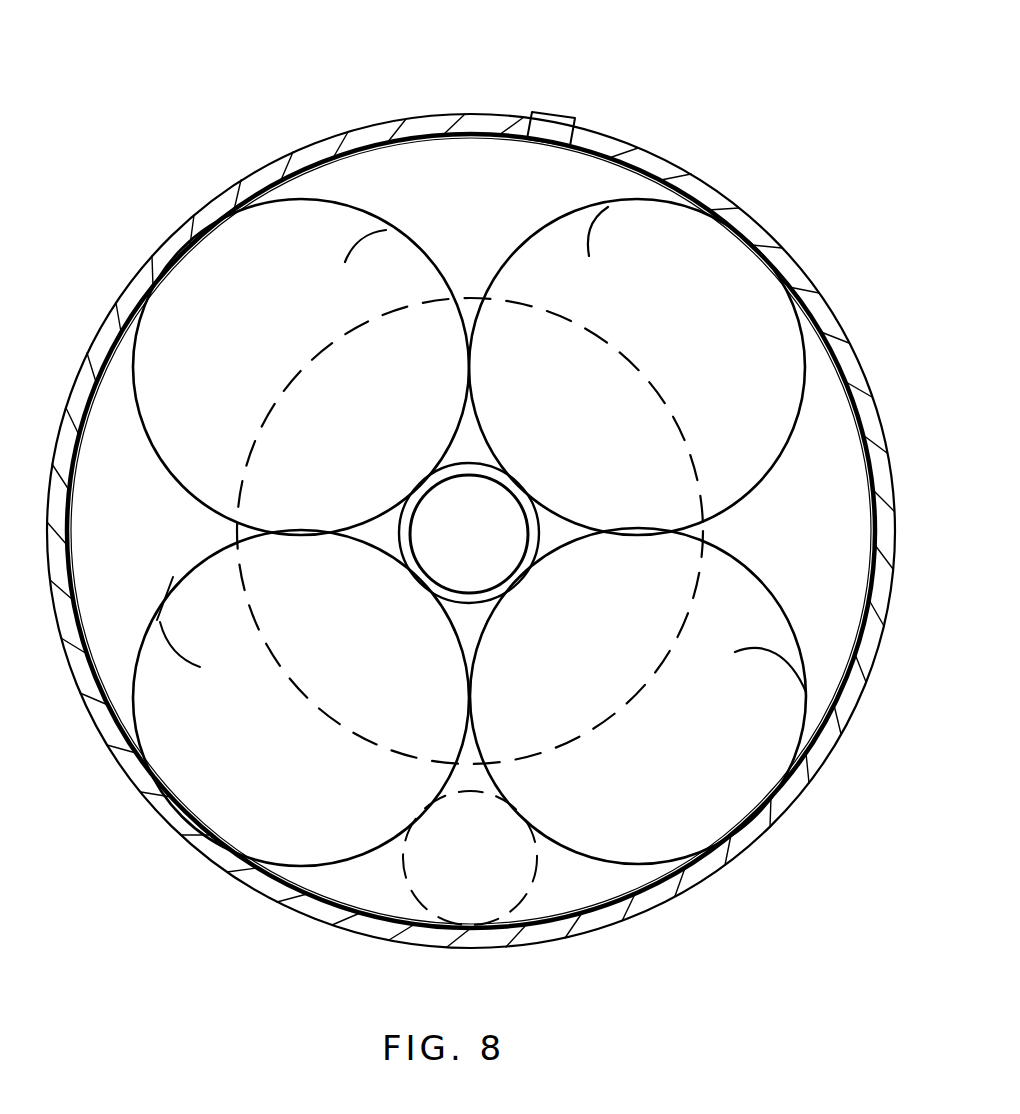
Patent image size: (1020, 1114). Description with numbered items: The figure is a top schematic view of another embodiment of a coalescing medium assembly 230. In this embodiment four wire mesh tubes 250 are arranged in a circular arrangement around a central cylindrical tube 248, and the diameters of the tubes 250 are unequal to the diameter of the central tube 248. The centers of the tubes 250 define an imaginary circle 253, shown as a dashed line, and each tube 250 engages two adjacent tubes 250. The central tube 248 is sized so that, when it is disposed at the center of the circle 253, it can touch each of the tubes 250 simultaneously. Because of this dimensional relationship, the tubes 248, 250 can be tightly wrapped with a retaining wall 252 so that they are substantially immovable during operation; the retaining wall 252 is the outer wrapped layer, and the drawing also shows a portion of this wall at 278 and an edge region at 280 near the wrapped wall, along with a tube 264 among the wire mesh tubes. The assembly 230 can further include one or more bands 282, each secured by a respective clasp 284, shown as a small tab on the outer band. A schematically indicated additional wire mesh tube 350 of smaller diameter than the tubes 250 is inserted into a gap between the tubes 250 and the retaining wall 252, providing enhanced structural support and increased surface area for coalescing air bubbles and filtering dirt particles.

The coalescing medium assembly 230 is at (713, 86).
The central cylindrical tube 248 is at (466, 592).
The wire mesh tube 250 is at (775, 470).
The retaining wall 252 is at (399, 130).
The imaginary circle 253 is at (639, 356).
The tube 264 is at (178, 661).
The inner layer 278 is at (92, 383).
The outer jacket 280 is at (66, 434).
The band 282 is at (643, 899).
The clasp 284 is at (548, 136).
The wire mesh tube 350 is at (538, 878).